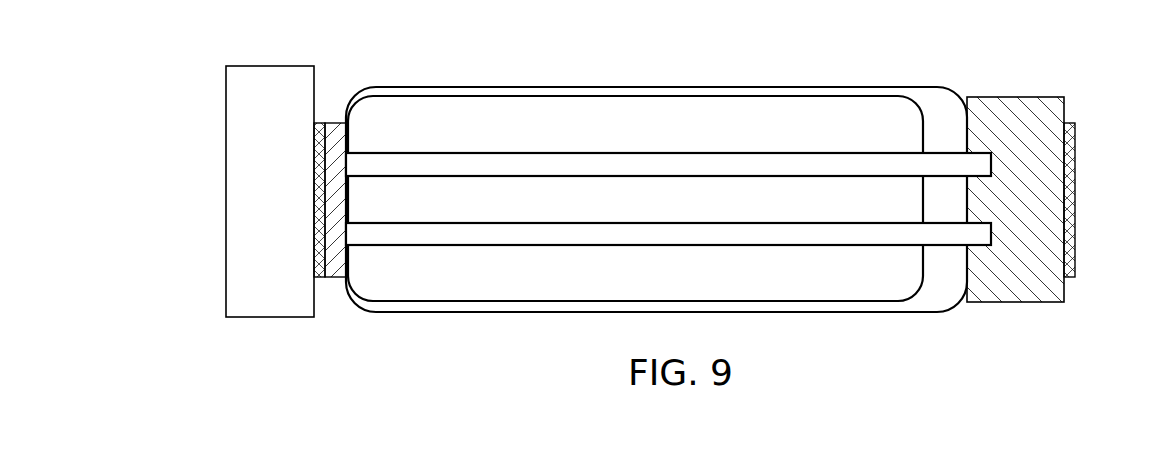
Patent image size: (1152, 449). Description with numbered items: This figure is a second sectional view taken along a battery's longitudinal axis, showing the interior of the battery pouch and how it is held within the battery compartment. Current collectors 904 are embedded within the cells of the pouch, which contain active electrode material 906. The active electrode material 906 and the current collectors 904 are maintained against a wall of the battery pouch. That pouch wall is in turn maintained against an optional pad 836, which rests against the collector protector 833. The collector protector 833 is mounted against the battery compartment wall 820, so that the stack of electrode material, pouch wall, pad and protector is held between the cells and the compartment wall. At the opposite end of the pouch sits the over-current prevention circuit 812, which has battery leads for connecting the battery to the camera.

The battery compartment wall 820 is at (268, 66).
The collector protector 833 is at (320, 122).
The optional pad 836 is at (337, 278).
The active electrode material 906 is at (802, 289).
The current collectors 904 is at (885, 158).
The over-current prevention circuit 812 is at (1027, 106).